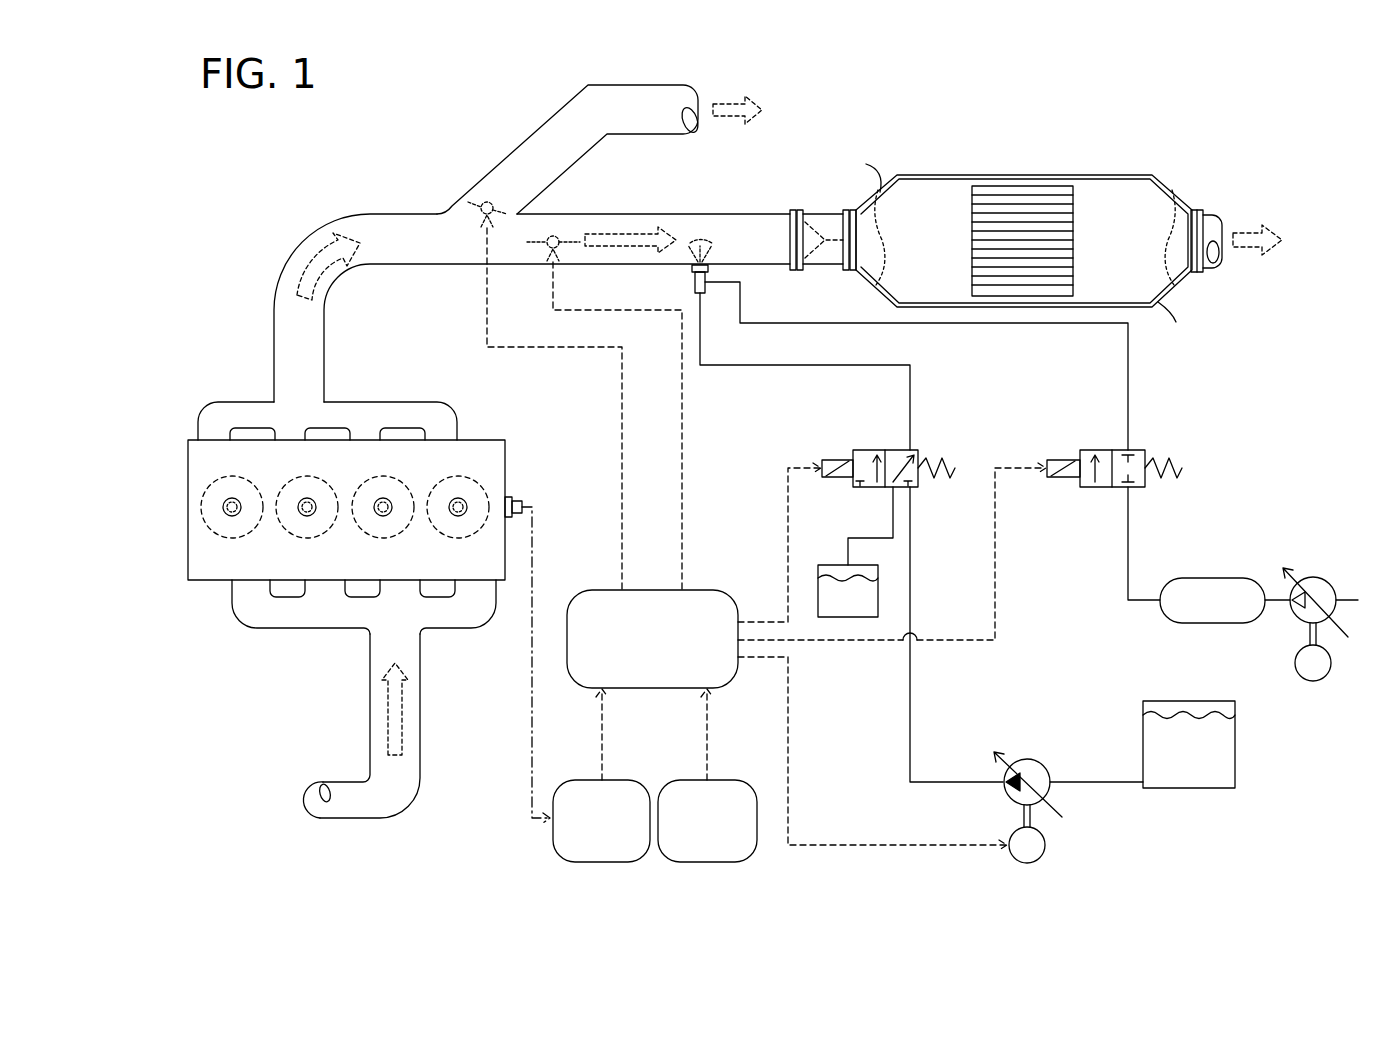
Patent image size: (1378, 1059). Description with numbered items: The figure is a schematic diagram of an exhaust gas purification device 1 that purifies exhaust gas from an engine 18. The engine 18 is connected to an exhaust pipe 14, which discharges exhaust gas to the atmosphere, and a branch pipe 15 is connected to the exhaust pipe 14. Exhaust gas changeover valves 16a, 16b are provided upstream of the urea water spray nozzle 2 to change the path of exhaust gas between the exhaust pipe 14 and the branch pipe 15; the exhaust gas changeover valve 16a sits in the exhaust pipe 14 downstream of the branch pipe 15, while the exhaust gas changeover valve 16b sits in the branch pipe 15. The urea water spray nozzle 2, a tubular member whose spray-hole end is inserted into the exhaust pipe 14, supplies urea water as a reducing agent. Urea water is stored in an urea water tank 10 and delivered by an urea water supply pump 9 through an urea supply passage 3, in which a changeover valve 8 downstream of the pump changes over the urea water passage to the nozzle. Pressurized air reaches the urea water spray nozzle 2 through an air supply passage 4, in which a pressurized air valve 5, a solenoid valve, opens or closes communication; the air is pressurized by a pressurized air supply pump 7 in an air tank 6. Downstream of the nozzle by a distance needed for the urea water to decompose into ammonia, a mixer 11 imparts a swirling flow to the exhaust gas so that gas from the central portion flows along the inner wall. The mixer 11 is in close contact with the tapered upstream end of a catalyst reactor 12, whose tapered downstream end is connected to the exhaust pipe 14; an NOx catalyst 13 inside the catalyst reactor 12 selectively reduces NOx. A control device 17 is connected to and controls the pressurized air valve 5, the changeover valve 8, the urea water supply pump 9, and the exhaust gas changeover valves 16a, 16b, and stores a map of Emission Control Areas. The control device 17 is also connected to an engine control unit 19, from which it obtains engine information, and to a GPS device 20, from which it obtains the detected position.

The exhaust gas purification device 1 is at (1327, 139).
The urea water spray nozzle 2 is at (690, 285).
The urea supply passage 3 is at (891, 744).
The air supply passage 4 is at (1114, 592).
The pressurized air valve 5 is at (1101, 502).
The air tank 6 is at (1212, 625).
The pressurized air supply pump 7 is at (1335, 592).
The changeover valve 8 is at (872, 419).
The urea water supply pump 9 is at (1025, 759).
The urea water tank 10 is at (868, 609).
The mixer 11 is at (825, 193).
The catalyst reactor 12 is at (932, 175).
The NOx catalyst 13 is at (1020, 188).
The exhaust pipe 14 is at (375, 212).
The branch pipe 15 is at (523, 150).
The exhaust gas changeover valve 16a is at (560, 236).
The exhaust gas changeover valve 16b is at (480, 200).
The control device 17 is at (658, 690).
The engine 18 is at (492, 440).
The engine control unit 19 is at (578, 780).
The GPS device 20 is at (731, 780).